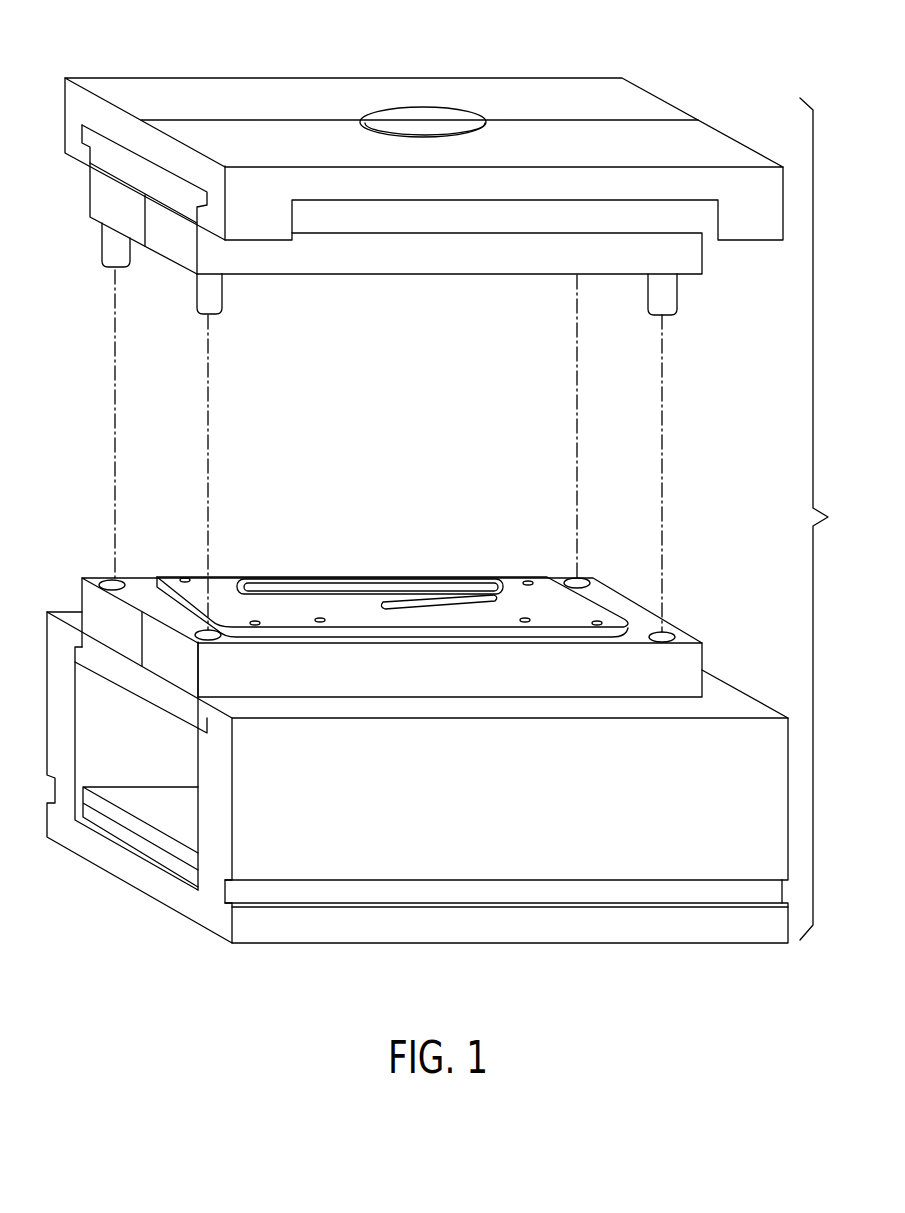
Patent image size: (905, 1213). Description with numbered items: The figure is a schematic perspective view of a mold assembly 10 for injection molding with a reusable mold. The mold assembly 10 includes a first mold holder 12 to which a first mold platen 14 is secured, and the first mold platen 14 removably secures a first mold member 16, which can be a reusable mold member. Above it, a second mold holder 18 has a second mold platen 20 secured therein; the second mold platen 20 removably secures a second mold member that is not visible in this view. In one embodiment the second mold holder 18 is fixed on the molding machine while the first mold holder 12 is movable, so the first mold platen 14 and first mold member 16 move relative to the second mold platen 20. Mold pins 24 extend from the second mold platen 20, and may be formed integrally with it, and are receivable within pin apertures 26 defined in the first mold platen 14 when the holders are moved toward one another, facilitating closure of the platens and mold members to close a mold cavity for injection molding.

The mold assembly 10 is at (831, 519).
The first mold holder 12 is at (312, 858).
The first mold platen 14 is at (100, 608).
The first mold member 16 is at (270, 607).
The second mold holder 18 is at (547, 93).
The second mold platen 20 is at (117, 163).
The mold pins 24 is at (118, 248).
The pin apertures 26 is at (113, 583).